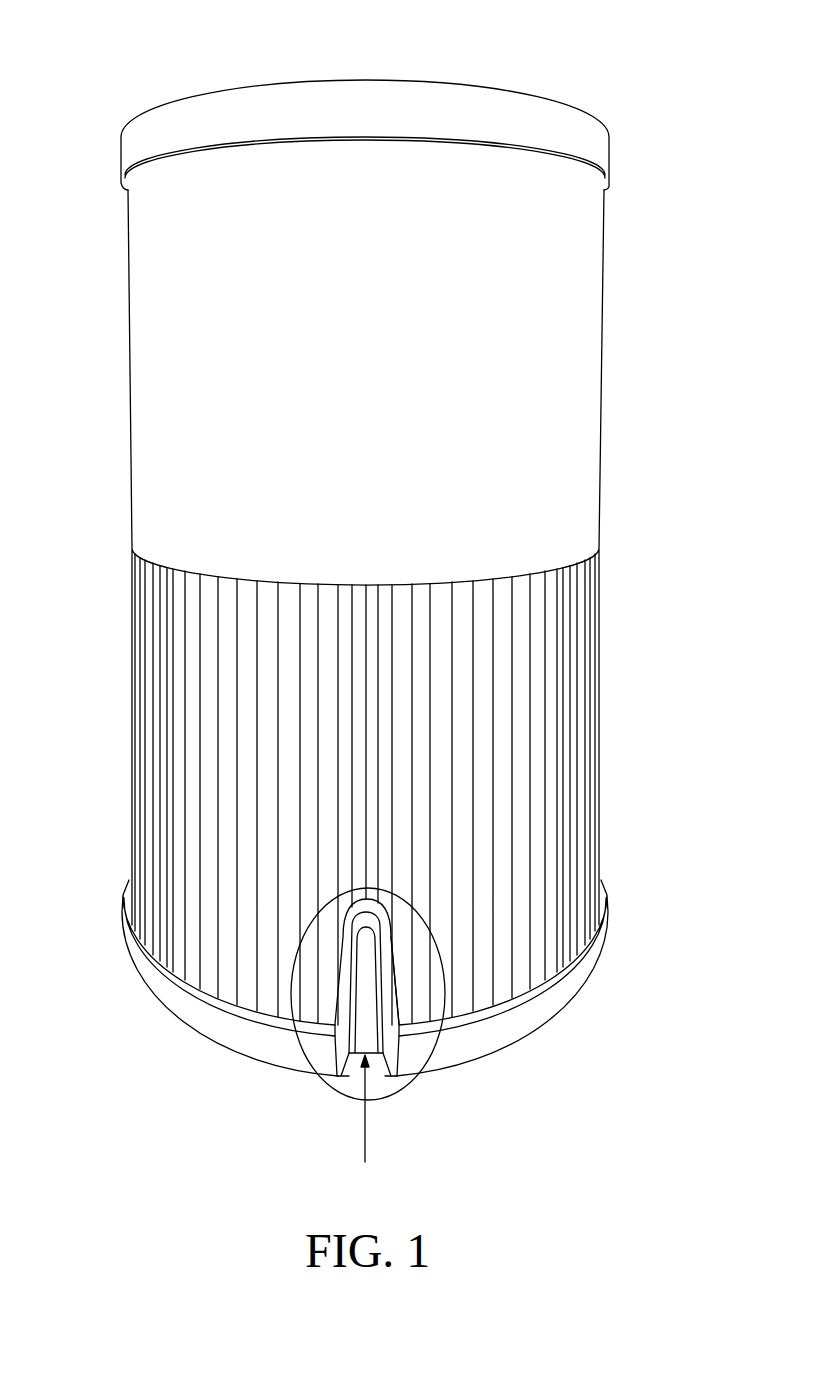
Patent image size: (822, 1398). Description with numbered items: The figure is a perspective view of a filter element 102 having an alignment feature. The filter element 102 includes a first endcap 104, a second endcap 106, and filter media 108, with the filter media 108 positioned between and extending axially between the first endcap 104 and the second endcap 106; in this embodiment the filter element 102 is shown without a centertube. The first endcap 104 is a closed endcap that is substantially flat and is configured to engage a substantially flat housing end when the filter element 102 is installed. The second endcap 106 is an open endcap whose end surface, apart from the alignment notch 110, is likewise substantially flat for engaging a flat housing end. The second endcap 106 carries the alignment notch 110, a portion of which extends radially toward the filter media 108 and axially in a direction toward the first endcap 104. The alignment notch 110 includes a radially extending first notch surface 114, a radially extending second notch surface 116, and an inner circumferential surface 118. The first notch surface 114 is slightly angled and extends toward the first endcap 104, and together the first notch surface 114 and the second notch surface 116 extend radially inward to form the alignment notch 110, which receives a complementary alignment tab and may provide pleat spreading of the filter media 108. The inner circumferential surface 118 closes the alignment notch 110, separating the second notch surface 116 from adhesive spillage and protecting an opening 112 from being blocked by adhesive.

The filter element 102 is at (113, 63).
The first endcap 104 is at (609, 145).
The second endcap 106 is at (568, 990).
The filter media 108 is at (572, 670).
The alignment notch 110 is at (396, 1072).
The opening 112 is at (366, 1125).
The first notch surface 114 is at (350, 958).
The second notch surface 116 is at (351, 1020).
The inner circumferential surface 118 is at (392, 1007).